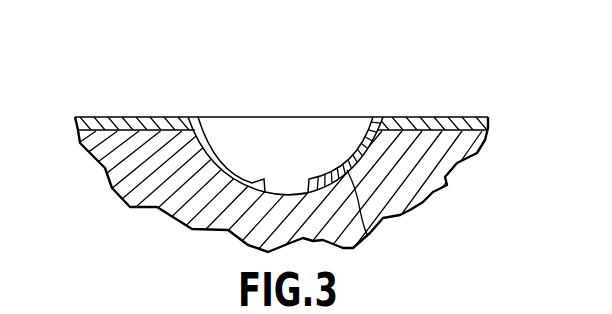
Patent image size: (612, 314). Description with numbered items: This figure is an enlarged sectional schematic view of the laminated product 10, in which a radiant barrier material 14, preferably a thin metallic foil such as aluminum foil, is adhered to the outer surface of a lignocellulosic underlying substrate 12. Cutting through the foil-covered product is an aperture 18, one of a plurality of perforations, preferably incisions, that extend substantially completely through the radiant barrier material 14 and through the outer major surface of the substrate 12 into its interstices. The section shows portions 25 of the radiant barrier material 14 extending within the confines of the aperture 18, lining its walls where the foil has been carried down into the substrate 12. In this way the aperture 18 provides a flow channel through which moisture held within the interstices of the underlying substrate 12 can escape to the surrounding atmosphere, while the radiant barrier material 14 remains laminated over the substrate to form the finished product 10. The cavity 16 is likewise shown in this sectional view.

The laminated product 10 is at (110, 96).
The lignocellulosic substrate 12 is at (448, 184).
The radiant barrier material 14 is at (148, 117).
The cavity 16 is at (287, 191).
The aperture 18 is at (368, 236).
The portions of radiant barrier material 25 is at (257, 176).